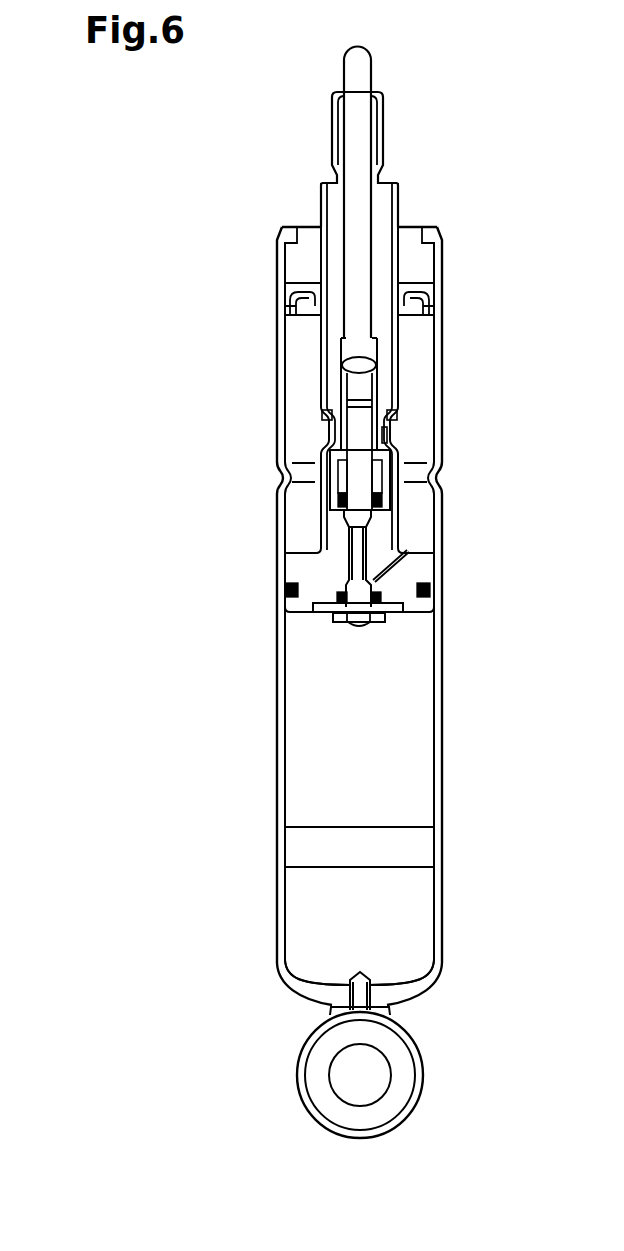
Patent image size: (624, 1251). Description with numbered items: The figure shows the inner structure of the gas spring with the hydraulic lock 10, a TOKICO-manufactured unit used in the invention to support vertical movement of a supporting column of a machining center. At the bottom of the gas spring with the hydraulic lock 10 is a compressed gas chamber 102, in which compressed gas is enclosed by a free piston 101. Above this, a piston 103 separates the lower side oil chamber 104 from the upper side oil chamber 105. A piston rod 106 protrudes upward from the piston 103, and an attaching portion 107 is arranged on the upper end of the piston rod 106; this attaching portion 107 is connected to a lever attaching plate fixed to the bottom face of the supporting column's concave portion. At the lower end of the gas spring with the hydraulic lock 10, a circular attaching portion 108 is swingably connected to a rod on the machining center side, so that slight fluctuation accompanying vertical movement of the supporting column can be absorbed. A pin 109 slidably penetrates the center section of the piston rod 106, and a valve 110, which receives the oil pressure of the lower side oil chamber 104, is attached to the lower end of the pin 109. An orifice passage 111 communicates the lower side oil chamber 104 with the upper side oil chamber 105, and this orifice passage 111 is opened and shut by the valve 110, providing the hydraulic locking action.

The gas spring with hydraulic lock 10 is at (449, 154).
The free piston 101 is at (420, 847).
The compressed gas chamber 102 is at (328, 920).
The piston 103 is at (418, 568).
The lower side oil chamber 104 is at (320, 762).
The upper side oil chamber 105 is at (297, 430).
The piston rod 106 is at (327, 380).
The attaching portion 107 is at (332, 130).
The circular attaching portion 108 is at (427, 1078).
The pin 109 is at (358, 330).
The valve 110 is at (390, 614).
The orifice passage 111 is at (408, 551).